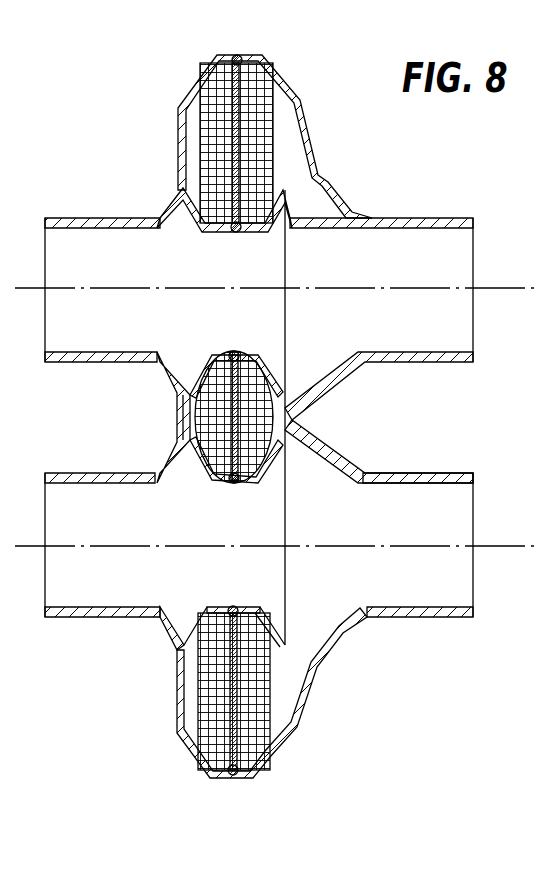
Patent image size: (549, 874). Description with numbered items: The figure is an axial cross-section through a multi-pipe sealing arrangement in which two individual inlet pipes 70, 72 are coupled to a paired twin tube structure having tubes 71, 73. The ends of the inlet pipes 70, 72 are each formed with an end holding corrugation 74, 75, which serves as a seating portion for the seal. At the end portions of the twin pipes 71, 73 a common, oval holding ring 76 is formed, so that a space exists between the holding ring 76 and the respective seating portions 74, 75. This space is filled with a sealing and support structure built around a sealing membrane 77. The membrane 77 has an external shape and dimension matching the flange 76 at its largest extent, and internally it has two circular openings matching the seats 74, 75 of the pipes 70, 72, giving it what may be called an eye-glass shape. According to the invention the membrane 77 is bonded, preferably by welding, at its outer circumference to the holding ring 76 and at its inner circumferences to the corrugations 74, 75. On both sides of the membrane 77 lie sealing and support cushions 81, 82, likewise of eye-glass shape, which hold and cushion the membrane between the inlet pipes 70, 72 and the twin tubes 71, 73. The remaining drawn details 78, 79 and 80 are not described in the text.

The inlet pipe 70 is at (62, 214).
The twin pipe 71 is at (422, 215).
The inlet pipe 72 is at (82, 620).
The twin pipe 73 is at (432, 621).
The end holding corrugation 74 is at (212, 223).
The end holding corrugation 75 is at (224, 608).
The oval holding ring 76 is at (268, 72).
The sealing membrane 77 is at (233, 672).
The top weld of upper mesh insert 78 is at (236, 55).
The bottom weld of upper mesh insert 79 is at (234, 232).
The weld of middle mesh insert 80 is at (233, 484).
The sealing and support cushion 81 is at (218, 131).
The sealing and support cushion 82 is at (253, 137).